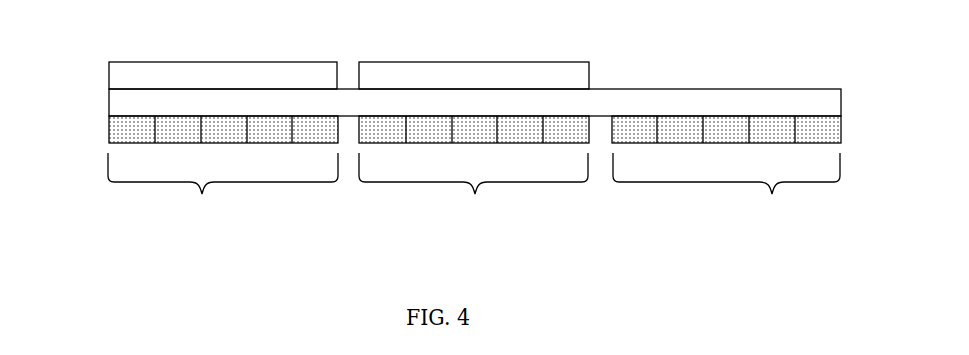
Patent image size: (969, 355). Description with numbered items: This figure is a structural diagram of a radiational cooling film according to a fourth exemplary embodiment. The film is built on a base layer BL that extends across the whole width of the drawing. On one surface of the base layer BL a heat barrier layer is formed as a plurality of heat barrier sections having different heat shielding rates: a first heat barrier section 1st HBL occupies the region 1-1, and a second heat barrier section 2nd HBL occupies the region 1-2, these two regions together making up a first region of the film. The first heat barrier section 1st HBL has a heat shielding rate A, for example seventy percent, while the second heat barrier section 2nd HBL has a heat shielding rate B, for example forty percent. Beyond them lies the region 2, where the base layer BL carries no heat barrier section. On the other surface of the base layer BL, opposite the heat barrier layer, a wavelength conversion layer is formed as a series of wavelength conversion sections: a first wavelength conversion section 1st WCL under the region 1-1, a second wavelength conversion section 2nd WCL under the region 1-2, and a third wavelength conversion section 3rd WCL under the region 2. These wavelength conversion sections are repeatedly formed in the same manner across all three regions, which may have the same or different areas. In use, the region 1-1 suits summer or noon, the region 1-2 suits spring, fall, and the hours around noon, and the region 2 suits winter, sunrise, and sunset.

The first heat barrier section 1st HBL is at (109, 78).
The second heat barrier section 2nd HBL is at (590, 62).
The base layer BL is at (841, 90).
The first wavelength conversion section 1st WCL is at (109, 129).
The second wavelength conversion section 2nd WCL is at (589, 143).
The third wavelength conversion section 3rd WCL is at (841, 130).
The element region 1-1 is at (223, 192).
The element region 1-2 is at (473, 192).
The element region 2 is at (726, 192).